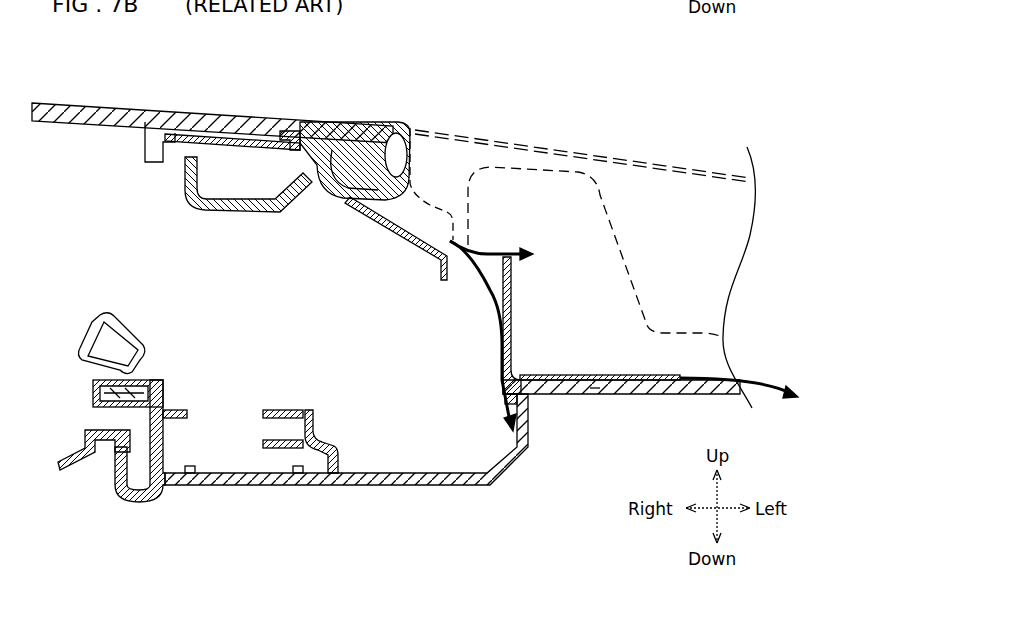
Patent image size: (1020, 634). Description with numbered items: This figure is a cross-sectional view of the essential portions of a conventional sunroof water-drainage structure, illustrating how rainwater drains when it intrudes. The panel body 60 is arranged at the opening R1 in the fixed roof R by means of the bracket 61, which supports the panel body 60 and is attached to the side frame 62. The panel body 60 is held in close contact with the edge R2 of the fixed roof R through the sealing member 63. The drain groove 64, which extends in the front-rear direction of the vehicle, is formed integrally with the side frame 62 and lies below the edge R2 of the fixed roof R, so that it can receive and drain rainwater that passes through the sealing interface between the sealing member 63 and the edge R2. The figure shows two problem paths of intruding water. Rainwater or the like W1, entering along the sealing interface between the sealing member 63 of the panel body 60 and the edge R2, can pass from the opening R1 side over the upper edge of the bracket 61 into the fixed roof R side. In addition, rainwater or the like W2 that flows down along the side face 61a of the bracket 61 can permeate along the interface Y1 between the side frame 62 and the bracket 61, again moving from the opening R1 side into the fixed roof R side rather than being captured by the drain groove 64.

The panel body 60 is at (222, 122).
The opening R1 is at (106, 187).
The edge of the fixed roof R2 is at (399, 125).
The sealing member 63 is at (404, 129).
The fixed roof R is at (632, 151).
The rainwater or the like W1 is at (481, 252).
The bracket 61 is at (512, 272).
The side face of the bracket 61a is at (500, 343).
The rainwater or the like W2 is at (560, 377).
The side frame 62 is at (657, 394).
The interface Y1 is at (595, 390).
The drain groove 64 is at (376, 425).